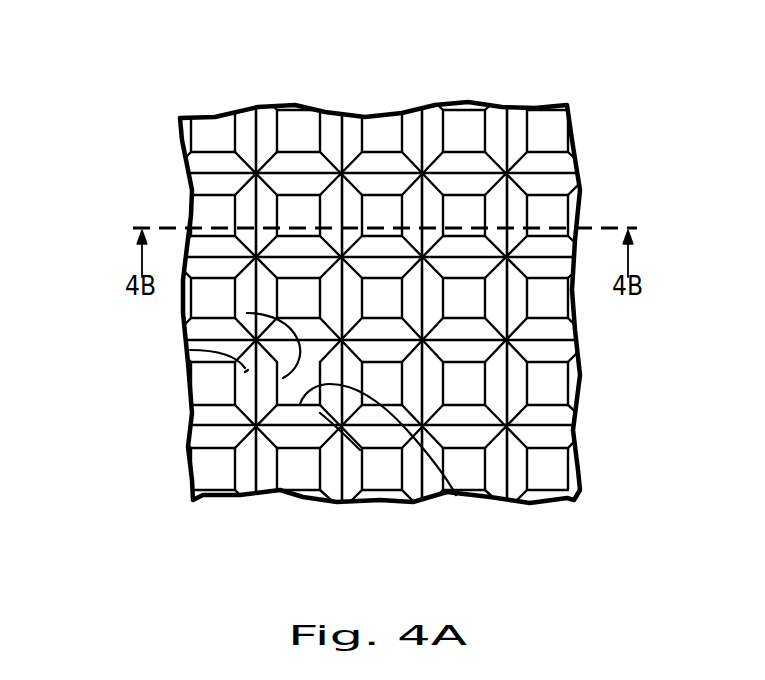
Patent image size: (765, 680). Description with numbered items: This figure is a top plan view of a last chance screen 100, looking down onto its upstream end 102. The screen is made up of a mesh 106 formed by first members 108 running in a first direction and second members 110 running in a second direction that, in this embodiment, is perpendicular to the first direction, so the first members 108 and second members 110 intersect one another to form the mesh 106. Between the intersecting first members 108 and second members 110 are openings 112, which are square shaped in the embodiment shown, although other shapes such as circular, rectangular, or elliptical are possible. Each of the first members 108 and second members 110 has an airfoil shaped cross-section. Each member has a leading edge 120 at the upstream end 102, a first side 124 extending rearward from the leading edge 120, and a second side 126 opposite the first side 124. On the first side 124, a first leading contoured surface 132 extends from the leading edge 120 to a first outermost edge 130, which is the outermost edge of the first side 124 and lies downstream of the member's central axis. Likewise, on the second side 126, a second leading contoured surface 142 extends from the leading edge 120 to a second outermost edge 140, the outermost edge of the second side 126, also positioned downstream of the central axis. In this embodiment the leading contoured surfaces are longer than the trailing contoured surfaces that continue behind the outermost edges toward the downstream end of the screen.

The last chance screen 100 is at (120, 88).
The upstream end 102 is at (207, 162).
The mesh 106 is at (245, 205).
The first members 108 is at (515, 117).
The second members 110 is at (553, 415).
The openings 112 is at (468, 467).
The leading edge 120 is at (277, 433).
The first side 124 is at (320, 420).
The second side 126 is at (303, 437).
The first outermost edge 130 is at (456, 494).
The first leading contoured surface 132 is at (303, 408).
The second outermost edge 140 is at (296, 428).
The second leading contoured surface 142 is at (257, 458).